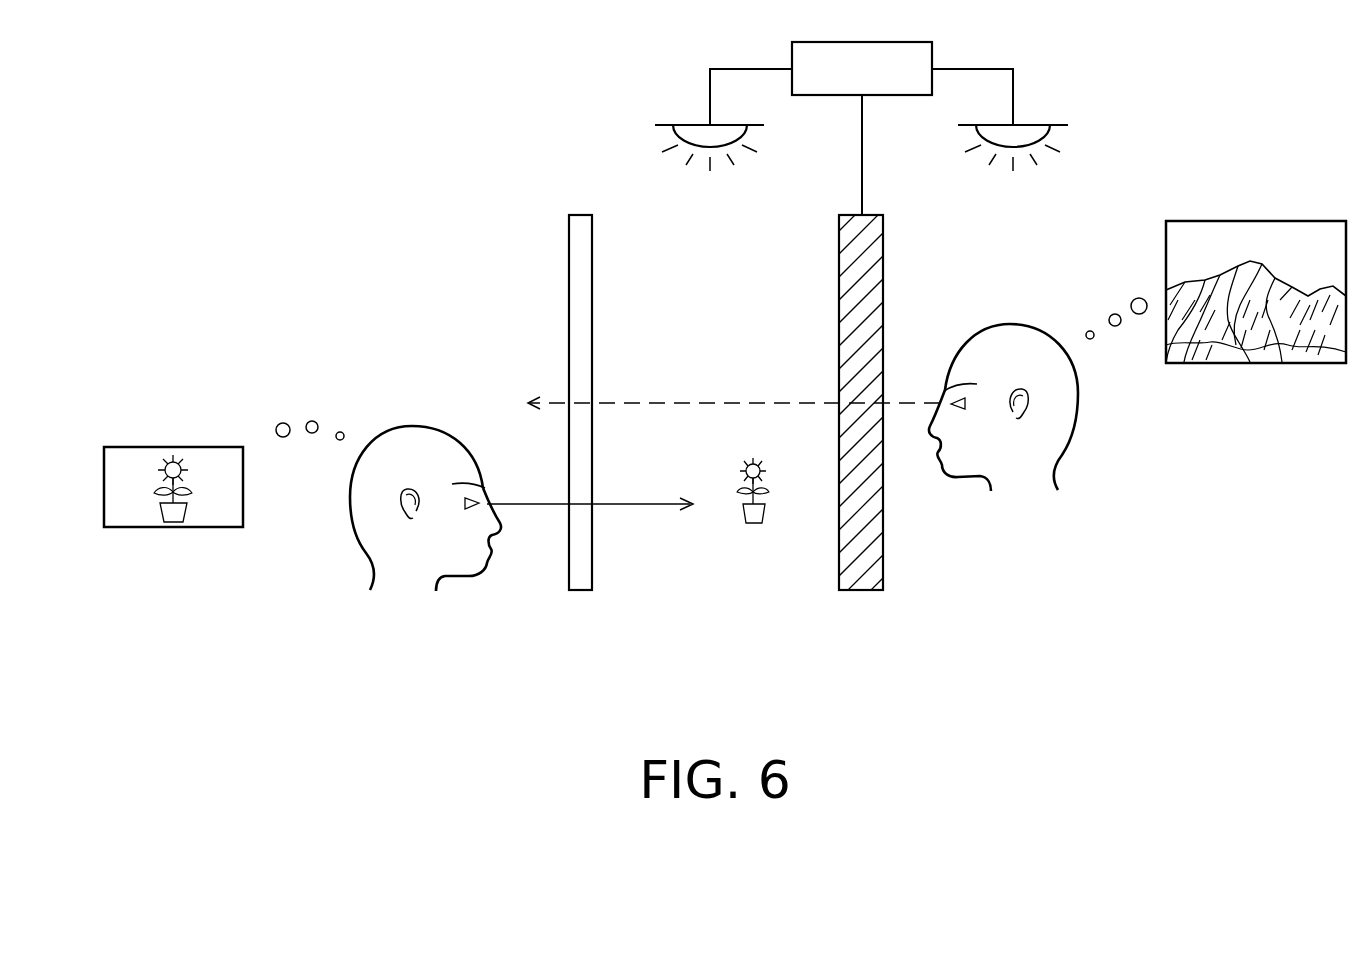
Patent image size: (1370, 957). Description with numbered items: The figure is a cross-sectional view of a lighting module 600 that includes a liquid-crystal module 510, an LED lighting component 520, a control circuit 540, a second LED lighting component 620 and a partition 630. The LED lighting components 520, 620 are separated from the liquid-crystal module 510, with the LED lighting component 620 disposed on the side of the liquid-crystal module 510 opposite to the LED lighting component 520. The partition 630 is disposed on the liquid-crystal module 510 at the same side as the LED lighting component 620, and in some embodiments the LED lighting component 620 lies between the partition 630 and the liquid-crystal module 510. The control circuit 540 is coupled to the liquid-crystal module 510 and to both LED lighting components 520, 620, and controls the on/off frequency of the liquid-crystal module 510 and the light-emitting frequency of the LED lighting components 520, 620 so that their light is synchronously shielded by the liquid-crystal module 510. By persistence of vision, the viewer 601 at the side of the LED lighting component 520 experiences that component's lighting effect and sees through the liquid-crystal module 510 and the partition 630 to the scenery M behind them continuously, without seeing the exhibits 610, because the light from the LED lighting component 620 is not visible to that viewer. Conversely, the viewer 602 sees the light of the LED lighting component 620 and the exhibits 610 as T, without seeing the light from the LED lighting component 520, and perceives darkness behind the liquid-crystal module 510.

The lighting module 600 is at (200, 92).
The control circuit 540 is at (836, 86).
The LED lighting component 620 is at (674, 133).
The LED lighting component 520 is at (1049, 133).
The liquid-crystal module 510 is at (862, 582).
The partition 630 is at (580, 582).
The exhibits 610 is at (755, 528).
The viewer 601 is at (1011, 324).
The viewer 602 is at (419, 426).
The exhibits seen by viewer T is at (172, 447).
The scenery M is at (1258, 365).